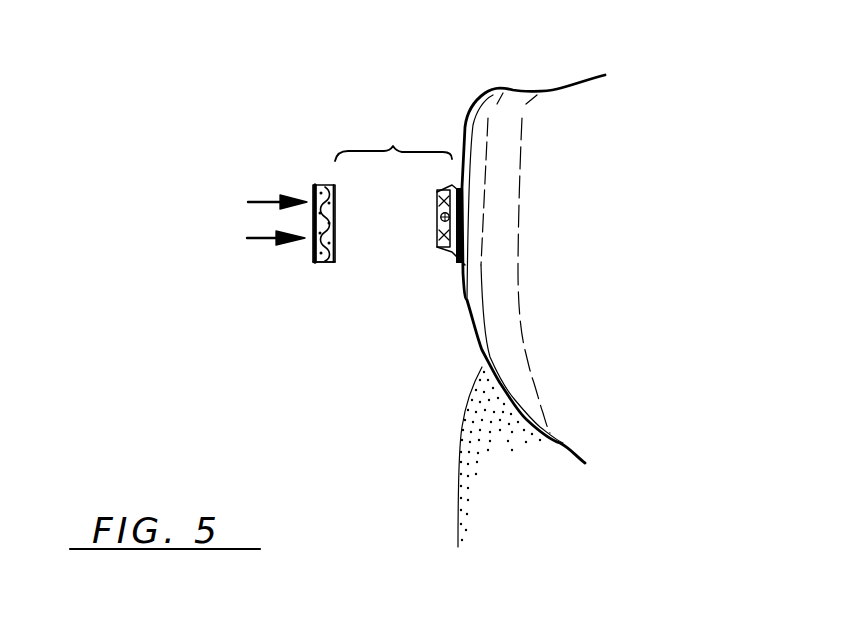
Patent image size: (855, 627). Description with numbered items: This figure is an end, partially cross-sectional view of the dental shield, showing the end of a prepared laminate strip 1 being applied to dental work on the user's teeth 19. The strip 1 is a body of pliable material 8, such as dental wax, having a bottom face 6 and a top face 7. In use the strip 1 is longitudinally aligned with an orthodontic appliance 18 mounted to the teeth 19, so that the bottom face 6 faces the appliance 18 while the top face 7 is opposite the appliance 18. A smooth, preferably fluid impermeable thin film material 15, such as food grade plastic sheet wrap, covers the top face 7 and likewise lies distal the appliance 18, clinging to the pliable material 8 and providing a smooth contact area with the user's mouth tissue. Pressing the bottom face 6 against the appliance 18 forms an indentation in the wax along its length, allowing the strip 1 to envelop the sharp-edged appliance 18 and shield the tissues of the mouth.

The laminate strip 1 is at (322, 267).
The bottom face 6 is at (335, 195).
The top face 7 is at (312, 263).
The pliable material 8 is at (335, 247).
The smooth thin film material 15 is at (313, 185).
The orthodontic appliance 18 is at (223, 221).
The teeth 19 is at (582, 100).